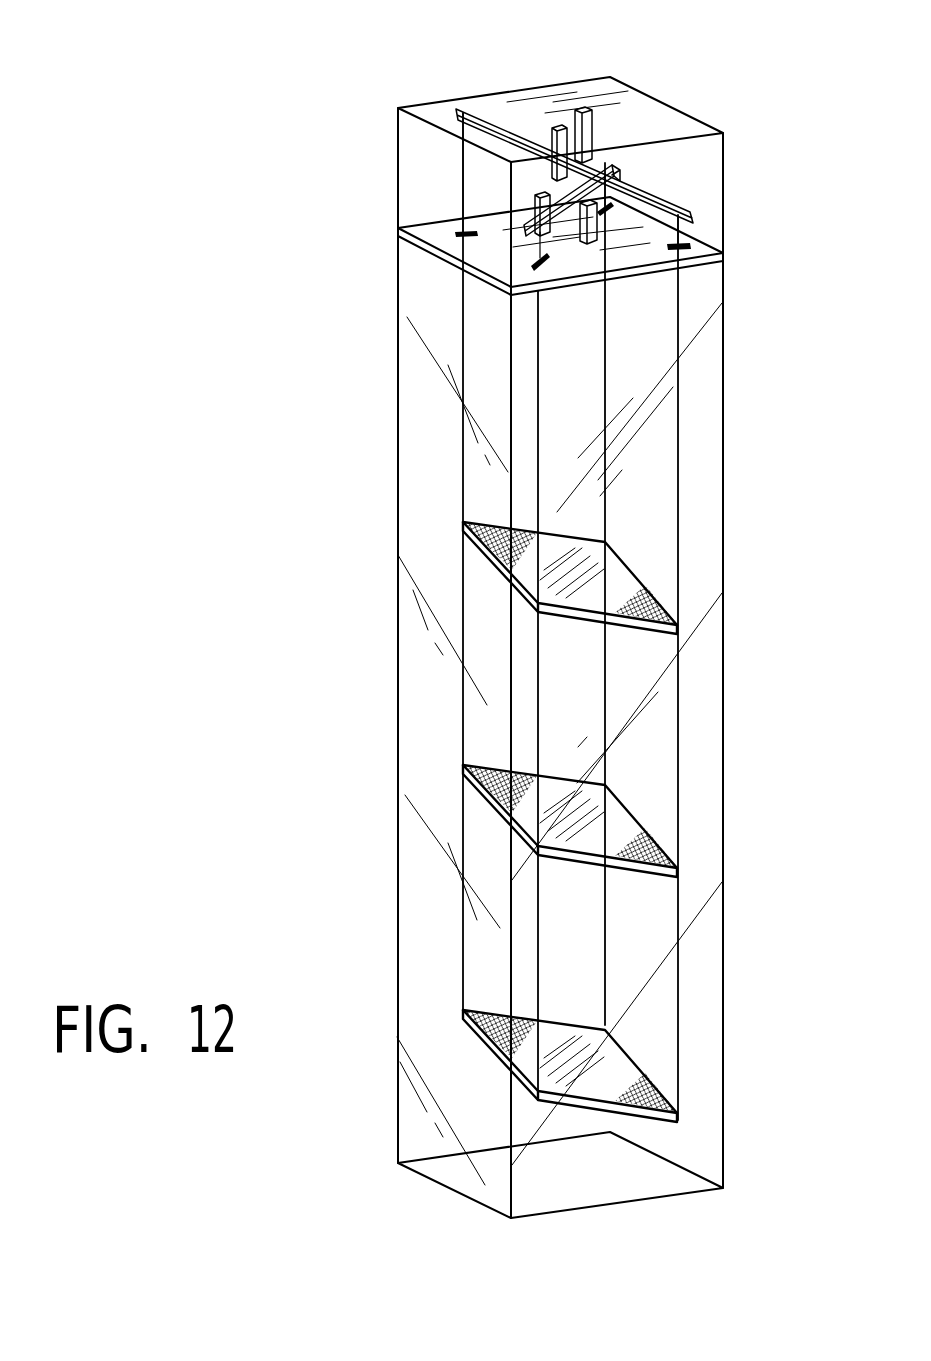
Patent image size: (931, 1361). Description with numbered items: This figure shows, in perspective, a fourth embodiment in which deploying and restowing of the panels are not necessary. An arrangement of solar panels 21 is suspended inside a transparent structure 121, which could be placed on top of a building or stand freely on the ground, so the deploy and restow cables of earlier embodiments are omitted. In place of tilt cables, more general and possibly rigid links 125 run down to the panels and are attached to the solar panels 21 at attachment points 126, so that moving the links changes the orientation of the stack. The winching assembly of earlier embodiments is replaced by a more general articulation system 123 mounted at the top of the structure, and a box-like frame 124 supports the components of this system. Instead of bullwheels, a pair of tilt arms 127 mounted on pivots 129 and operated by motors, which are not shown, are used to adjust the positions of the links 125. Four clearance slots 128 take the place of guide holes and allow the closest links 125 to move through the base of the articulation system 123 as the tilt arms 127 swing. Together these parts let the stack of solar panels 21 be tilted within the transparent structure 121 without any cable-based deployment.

The articulation system 123 is at (296, 159).
The transparent structure 121 is at (723, 743).
The links 125 is at (678, 459).
The box-like frame 124 is at (398, 263).
The tilt arms 127 is at (658, 195).
The pivots 129 is at (583, 157).
The clearance slots 128 is at (680, 246).
The solar panels 21 is at (463, 562).
The attachment points 126 is at (463, 776).